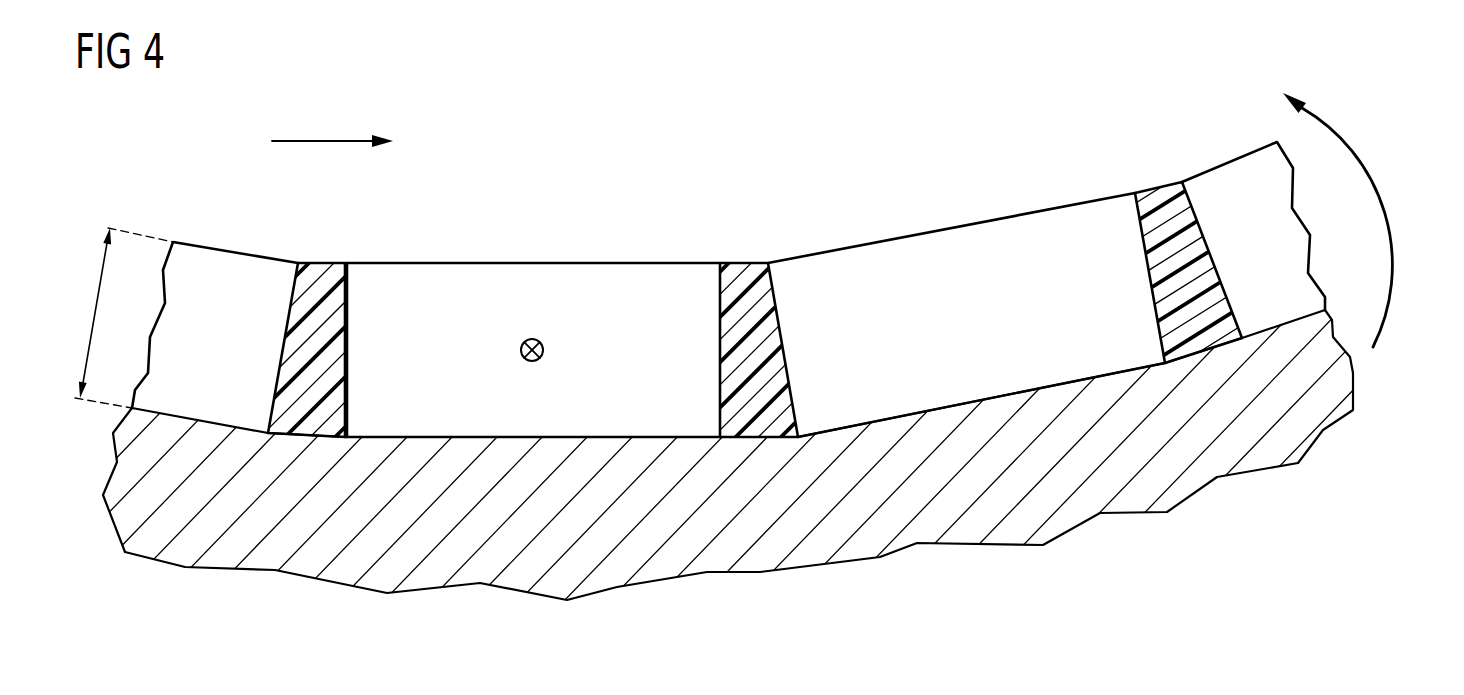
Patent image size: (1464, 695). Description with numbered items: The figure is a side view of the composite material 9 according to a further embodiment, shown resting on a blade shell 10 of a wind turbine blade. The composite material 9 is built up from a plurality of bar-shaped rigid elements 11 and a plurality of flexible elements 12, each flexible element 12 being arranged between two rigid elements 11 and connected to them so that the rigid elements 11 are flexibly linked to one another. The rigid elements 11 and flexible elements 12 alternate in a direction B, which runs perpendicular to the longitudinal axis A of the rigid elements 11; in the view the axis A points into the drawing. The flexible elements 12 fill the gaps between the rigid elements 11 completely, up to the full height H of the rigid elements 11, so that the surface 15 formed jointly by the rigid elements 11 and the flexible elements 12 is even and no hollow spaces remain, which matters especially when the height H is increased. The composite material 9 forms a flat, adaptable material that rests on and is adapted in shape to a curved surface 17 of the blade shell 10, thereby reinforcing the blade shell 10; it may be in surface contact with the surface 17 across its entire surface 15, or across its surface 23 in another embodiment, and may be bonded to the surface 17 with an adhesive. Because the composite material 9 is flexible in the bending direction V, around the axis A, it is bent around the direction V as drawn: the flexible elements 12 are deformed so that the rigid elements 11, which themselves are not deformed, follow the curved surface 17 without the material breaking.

The composite material 9 is at (744, 288).
The blade shell 10 is at (960, 533).
The rigid element 11 is at (233, 267).
The flexible element 12 is at (320, 273).
The surface 15 is at (431, 262).
The curved surface 17 is at (1009, 380).
The surface 23 is at (460, 440).
The longitudinal axis A is at (545, 350).
The direction B is at (325, 141).
The height H is at (124, 318).
The bending direction V is at (1390, 210).